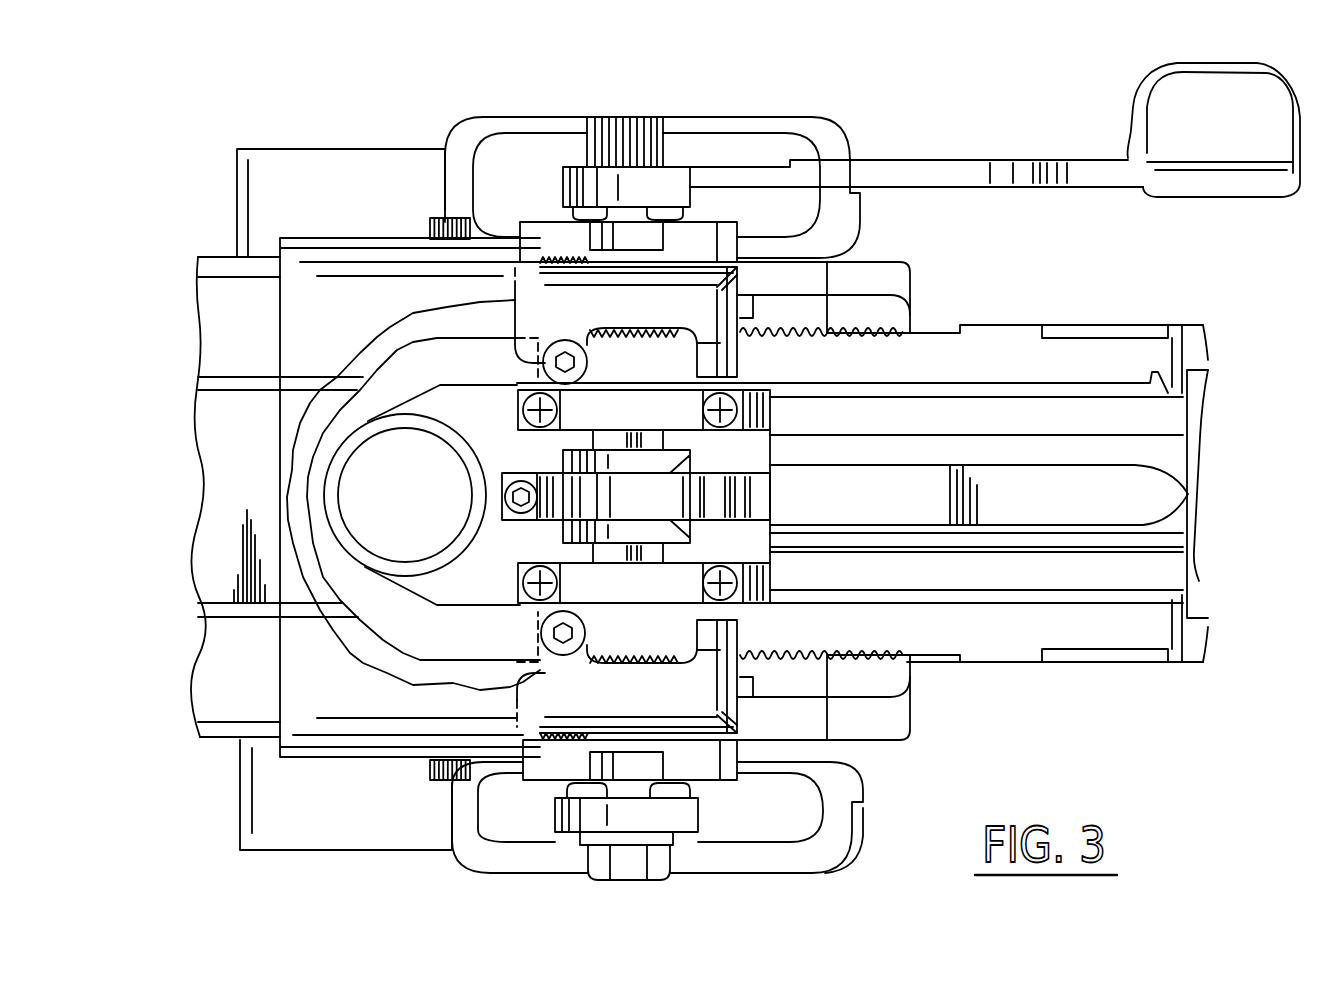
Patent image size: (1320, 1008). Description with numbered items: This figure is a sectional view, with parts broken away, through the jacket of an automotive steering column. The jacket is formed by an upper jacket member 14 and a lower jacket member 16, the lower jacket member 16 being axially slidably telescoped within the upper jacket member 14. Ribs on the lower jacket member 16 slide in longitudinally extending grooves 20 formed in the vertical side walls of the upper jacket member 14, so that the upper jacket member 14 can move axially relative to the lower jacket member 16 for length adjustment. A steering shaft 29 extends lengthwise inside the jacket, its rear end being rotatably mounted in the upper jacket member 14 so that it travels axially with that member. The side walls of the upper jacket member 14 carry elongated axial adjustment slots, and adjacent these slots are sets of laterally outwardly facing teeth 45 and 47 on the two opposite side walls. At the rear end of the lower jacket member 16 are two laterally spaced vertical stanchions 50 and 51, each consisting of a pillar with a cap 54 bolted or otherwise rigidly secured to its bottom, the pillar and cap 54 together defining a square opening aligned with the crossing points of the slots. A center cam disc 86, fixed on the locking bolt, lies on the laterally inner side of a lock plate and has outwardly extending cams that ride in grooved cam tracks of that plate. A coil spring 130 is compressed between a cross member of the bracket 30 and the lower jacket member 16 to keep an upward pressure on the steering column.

The upper jacket member 14 is at (1022, 308).
The lower jacket member 16 is at (790, 448).
The longitudinally extending grooves 20 is at (1090, 385).
The steering shaft 29 is at (1160, 492).
The bracket 30 is at (295, 300).
The teeth 45 is at (860, 663).
The teeth 47 is at (857, 328).
The stanchion 50 is at (505, 407).
The stanchion 51 is at (508, 585).
The cap 54 is at (633, 398).
The center cam disc 86 is at (657, 513).
The coil spring 130 is at (330, 495).